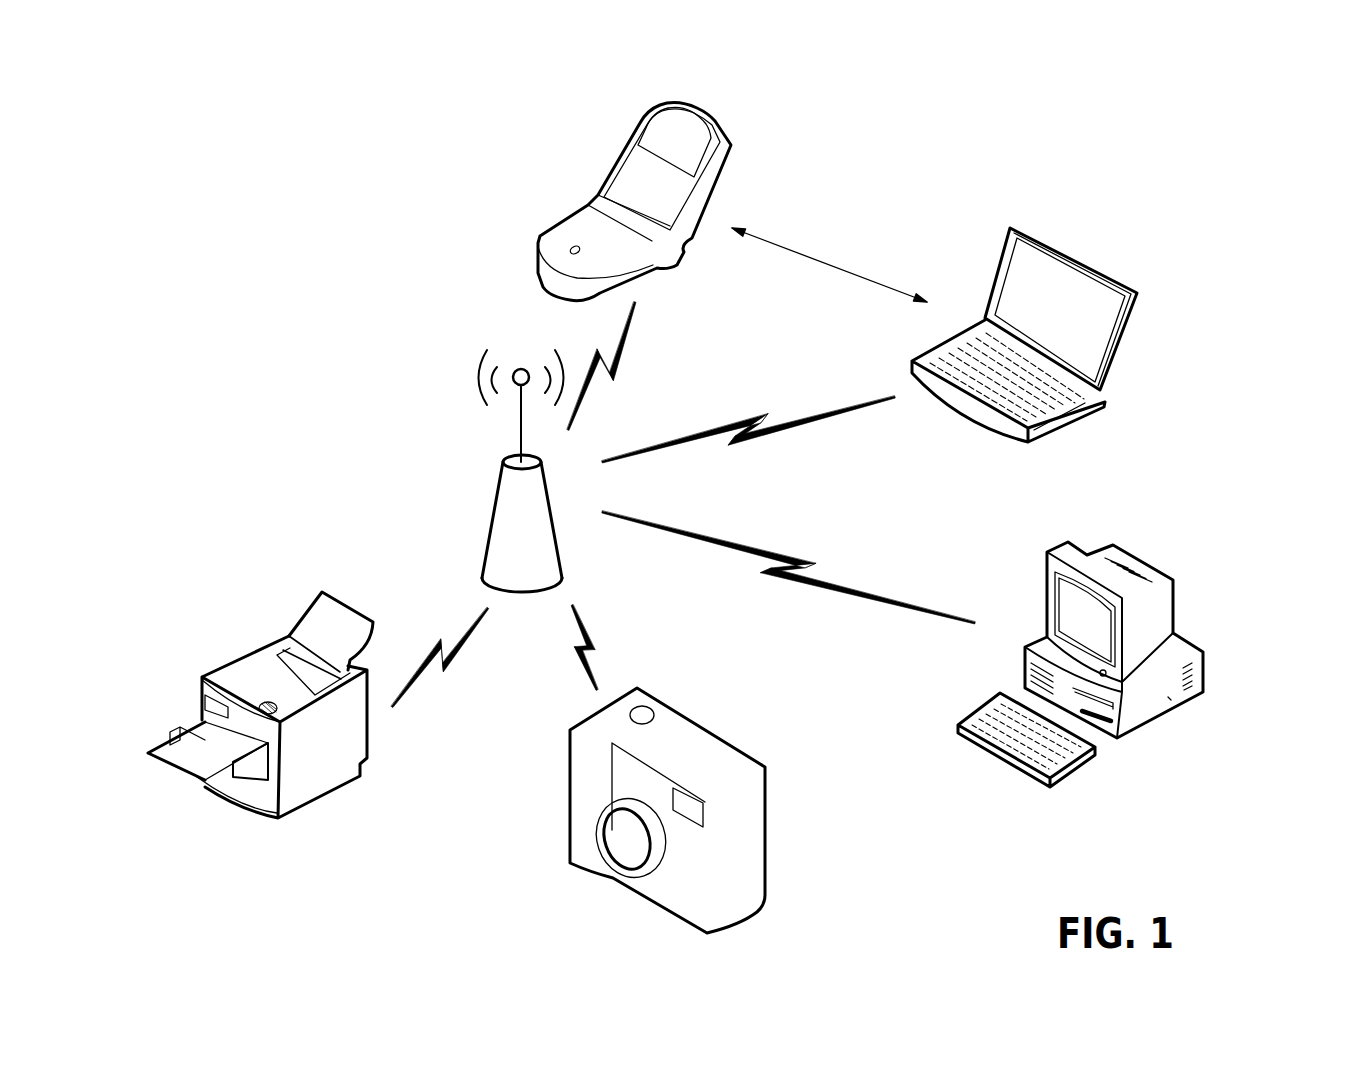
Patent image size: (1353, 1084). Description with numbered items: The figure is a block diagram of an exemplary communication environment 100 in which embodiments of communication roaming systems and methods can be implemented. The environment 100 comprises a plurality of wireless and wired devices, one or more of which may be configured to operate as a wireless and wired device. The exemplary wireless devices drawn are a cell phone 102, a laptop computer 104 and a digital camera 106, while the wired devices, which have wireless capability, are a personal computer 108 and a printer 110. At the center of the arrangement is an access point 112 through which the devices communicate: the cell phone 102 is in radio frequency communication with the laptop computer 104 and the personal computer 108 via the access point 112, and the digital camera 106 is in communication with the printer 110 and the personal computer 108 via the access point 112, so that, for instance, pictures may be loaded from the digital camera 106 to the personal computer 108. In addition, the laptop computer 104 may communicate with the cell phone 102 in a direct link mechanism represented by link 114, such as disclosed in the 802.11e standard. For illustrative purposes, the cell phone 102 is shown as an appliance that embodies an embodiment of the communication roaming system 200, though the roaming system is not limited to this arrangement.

The communication environment 100 is at (277, 203).
The cell phone 102 is at (628, 140).
The laptop computer 104 is at (1037, 232).
The digital camera 106 is at (637, 688).
The personal computer 108 is at (1157, 570).
The printer 110 is at (290, 627).
The access point 112 is at (490, 527).
The link 114 is at (800, 250).
The communication roaming system 200 is at (752, 172).